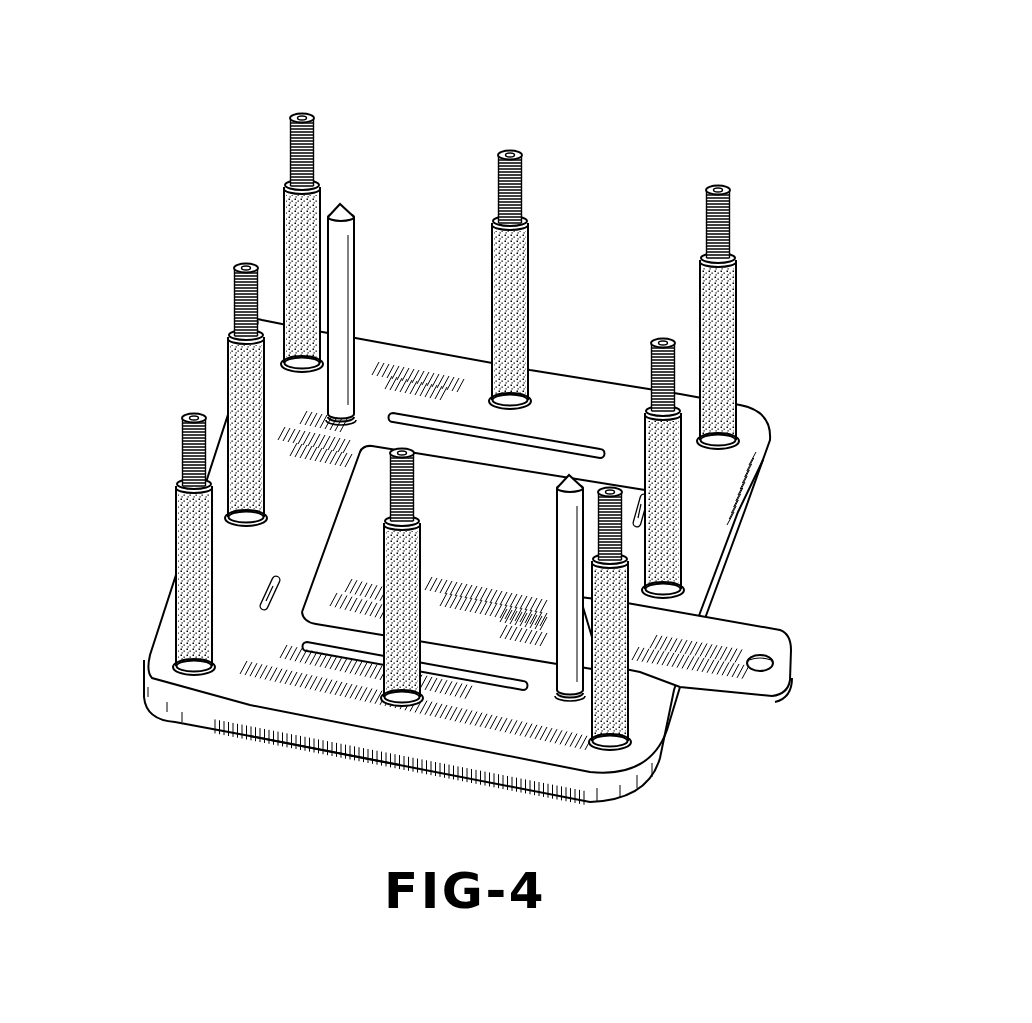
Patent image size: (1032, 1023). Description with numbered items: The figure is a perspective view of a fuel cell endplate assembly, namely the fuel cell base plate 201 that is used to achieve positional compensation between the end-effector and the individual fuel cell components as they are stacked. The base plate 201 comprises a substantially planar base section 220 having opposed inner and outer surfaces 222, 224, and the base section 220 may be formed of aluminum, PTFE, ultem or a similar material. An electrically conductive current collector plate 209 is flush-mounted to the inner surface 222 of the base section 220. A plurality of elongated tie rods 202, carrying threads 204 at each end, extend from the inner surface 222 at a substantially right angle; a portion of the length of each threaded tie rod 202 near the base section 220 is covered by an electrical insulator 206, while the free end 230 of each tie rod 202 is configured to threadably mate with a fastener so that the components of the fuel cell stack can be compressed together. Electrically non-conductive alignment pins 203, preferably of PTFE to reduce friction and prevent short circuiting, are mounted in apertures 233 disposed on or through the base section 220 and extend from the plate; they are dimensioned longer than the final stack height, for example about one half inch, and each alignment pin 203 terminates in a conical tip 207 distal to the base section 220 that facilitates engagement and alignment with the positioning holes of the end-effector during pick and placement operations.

The fuel cell base plate 201 is at (203, 730).
The tie rod 202 is at (290, 172).
The alignment pin 203 is at (340, 262).
The threads 204 is at (291, 123).
The electrical insulator 206 is at (296, 218).
The conical tip 207 is at (343, 212).
The current collector plate 209 is at (745, 637).
The base section 220 is at (480, 700).
The inner surface 222 is at (738, 455).
The outer surface 224 is at (283, 748).
The end 230 is at (300, 114).
The aperture 233 is at (345, 428).